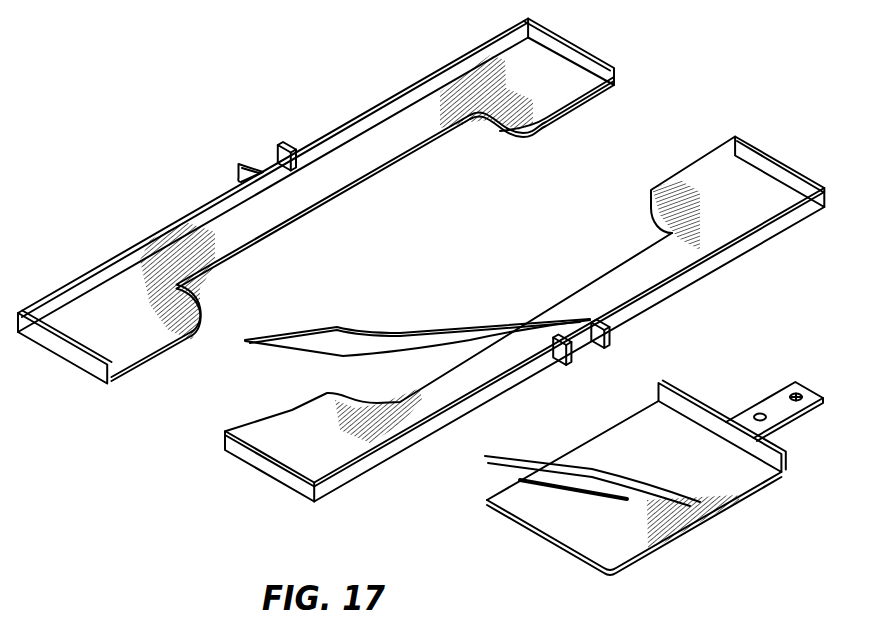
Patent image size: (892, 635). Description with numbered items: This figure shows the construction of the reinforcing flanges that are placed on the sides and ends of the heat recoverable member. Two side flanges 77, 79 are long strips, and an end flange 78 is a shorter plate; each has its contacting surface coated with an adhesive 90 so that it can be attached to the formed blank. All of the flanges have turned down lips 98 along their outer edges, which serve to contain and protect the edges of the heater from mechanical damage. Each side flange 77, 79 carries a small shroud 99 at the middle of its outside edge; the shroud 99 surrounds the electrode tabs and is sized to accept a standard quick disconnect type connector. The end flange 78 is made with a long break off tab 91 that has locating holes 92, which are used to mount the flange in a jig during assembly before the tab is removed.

The turned down lip 98 is at (105, 263).
The side flange 79 is at (583, 49).
The side flange 77 is at (767, 153).
The shroud 99 is at (281, 141).
The adhesive 90 is at (504, 460).
The end flange 78 is at (690, 404).
The break off tab 91 is at (791, 384).
The locating hole 92 is at (797, 393).